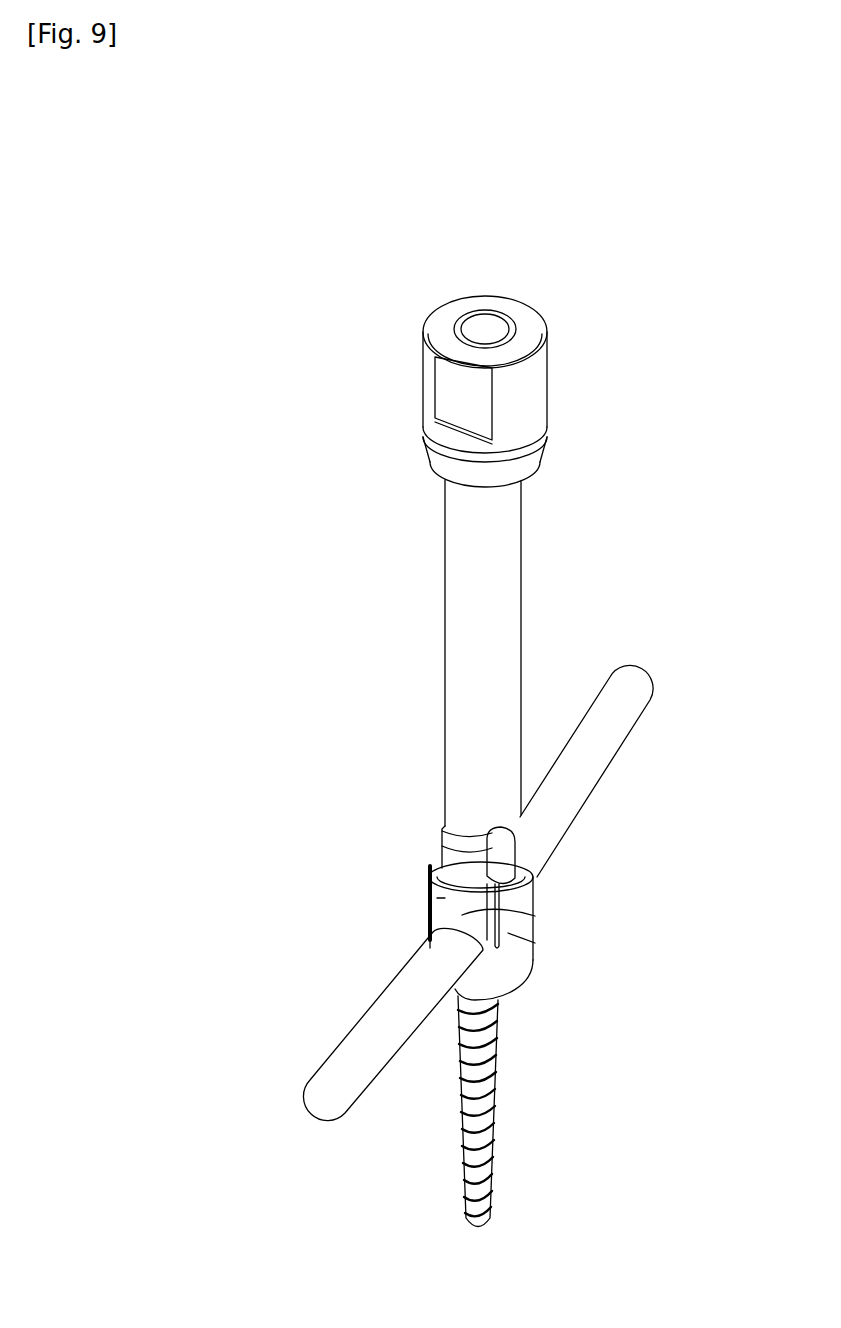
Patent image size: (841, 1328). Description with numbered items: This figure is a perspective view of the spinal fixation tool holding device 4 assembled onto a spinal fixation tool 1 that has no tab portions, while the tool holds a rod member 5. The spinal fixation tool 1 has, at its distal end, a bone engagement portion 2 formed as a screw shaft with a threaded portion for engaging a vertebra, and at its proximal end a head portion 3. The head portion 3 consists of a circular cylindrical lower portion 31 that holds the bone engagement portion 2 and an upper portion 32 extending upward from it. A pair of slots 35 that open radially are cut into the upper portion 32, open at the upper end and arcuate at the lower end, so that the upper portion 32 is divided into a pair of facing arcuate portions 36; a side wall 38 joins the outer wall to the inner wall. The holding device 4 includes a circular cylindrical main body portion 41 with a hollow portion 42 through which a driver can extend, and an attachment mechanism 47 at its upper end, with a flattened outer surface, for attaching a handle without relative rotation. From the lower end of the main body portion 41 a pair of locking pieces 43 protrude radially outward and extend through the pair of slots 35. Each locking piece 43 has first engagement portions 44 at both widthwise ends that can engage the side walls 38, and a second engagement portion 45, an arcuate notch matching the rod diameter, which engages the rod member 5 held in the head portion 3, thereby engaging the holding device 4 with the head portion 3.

The spinal fixation tool 1 is at (518, 1036).
The bone engagement portion 2 is at (500, 1080).
The head portion 3 is at (518, 954).
The spinal fixation tool holding device 4 is at (489, 556).
The rod member 5 is at (615, 743).
The lower portion 31 is at (532, 992).
The upper portion 32 is at (558, 875).
The slots 35 is at (435, 977).
The arcuate portions 36 is at (425, 910).
The side wall 38 is at (532, 990).
The main body portion 41 is at (510, 562).
The hollow portion 42 is at (490, 333).
The locking pieces 43 is at (530, 850).
The first engagement portions 44 is at (425, 918).
The second engagement portion 45 is at (503, 915).
The attachment mechanism 47 is at (430, 378).